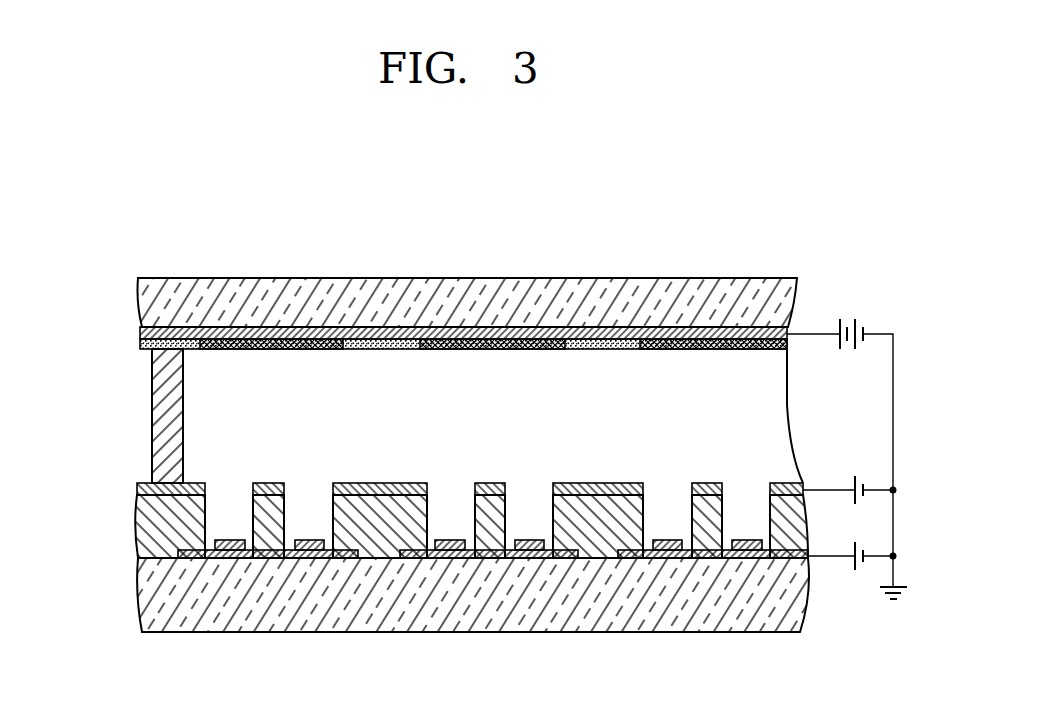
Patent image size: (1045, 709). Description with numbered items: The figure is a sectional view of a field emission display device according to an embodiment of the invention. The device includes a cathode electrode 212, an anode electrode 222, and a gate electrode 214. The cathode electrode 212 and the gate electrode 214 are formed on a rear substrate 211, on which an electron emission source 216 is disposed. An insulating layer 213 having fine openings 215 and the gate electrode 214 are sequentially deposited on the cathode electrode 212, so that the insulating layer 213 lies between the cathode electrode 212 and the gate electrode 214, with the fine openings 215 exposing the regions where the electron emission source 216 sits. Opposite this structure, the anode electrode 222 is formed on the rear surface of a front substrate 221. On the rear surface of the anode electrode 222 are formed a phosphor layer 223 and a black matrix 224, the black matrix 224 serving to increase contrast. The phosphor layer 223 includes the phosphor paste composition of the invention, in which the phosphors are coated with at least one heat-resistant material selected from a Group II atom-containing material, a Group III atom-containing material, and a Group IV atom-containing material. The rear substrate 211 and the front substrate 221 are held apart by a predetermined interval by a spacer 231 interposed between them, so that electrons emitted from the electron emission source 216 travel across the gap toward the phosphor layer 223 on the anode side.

The rear substrate 211 is at (150, 594).
The cathode electrode 212 is at (265, 553).
The insulating layer 213 is at (150, 528).
The gate electrode 214 is at (137, 488).
The fine openings 215 is at (312, 500).
The electron emission source 216 is at (227, 553).
The front substrate 221 is at (139, 303).
The anode electrode 222 is at (140, 333).
The phosphor layer 223 is at (273, 338).
The black matrix 224 is at (140, 345).
The spacer 231 is at (152, 415).